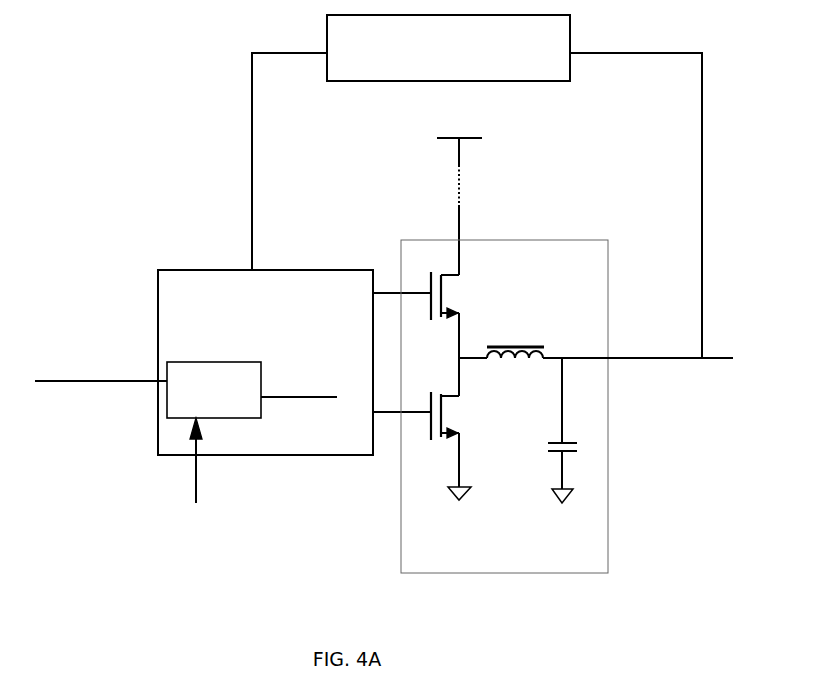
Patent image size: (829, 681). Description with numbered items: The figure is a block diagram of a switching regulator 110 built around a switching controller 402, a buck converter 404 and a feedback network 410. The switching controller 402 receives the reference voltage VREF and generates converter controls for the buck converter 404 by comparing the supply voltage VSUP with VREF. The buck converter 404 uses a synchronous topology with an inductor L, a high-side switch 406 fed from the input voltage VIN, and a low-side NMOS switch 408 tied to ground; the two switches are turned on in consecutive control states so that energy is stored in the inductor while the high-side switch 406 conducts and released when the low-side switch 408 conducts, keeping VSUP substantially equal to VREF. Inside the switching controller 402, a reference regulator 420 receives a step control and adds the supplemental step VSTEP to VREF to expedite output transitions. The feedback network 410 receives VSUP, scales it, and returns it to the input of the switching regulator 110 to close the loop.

The switching regulator 110 is at (384, 323).
The feedback network 410 is at (572, 30).
The switching controller 402 is at (322, 270).
The reference regulator 420 is at (193, 402).
The buck converter 404 is at (563, 241).
The high-side switch 406 is at (465, 289).
The low-side NMOS switch 408 is at (461, 416).